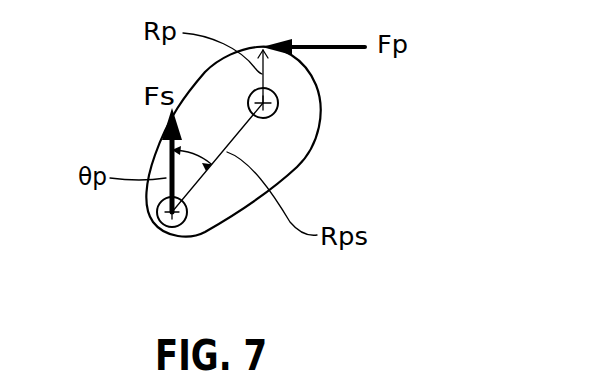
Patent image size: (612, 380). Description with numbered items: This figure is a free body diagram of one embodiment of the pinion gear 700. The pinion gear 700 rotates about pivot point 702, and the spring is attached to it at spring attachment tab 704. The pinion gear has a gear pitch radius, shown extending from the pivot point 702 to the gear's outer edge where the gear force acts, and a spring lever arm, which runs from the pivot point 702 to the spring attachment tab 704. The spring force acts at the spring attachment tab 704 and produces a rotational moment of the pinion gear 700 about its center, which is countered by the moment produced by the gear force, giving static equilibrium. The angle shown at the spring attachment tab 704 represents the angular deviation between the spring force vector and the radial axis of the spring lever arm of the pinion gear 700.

The pinion gear 700 is at (300, 170).
The pivot point 702 is at (278, 103).
The spring attachment tab 704 is at (161, 219).